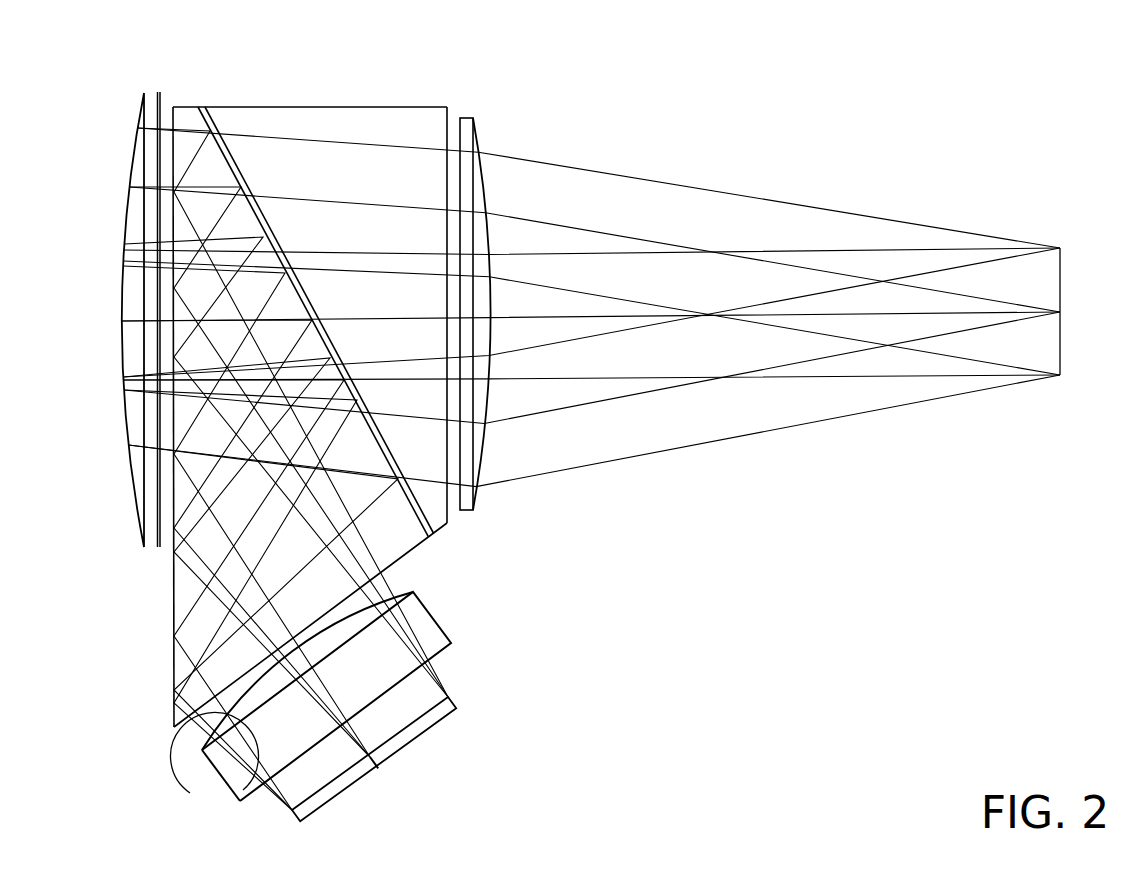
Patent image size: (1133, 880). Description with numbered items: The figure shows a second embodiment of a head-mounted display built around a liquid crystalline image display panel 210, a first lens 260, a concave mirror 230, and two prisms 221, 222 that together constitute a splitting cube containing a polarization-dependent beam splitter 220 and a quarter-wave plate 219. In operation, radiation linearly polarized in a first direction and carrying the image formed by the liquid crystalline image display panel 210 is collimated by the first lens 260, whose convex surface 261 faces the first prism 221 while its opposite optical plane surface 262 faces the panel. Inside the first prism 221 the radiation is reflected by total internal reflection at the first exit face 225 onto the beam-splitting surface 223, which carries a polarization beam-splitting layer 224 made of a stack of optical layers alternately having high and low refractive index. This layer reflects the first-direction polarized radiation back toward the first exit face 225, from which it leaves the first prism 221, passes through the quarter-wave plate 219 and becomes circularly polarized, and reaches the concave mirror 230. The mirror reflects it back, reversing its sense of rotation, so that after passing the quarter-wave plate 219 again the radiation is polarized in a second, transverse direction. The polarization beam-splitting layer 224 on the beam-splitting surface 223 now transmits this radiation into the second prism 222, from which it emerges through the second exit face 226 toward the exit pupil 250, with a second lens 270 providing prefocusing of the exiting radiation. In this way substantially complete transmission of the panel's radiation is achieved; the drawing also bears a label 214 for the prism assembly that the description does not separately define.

The liquid crystalline image display panel 210 is at (410, 748).
The prism 214 is at (295, 107).
The λ/4 plate 219 is at (158, 100).
The polarization-dependent beam splitter 220 is at (160, 537).
The first prism 221 is at (183, 598).
The second prism 222 is at (348, 122).
The beam-splitting surface 223 is at (432, 520).
The polarization beam-splitting layer 224 is at (228, 143).
The first exit face 225 is at (172, 642).
The second exit face 226 is at (447, 110).
The concave mirror 230 is at (125, 483).
The exit pupil 250 is at (1065, 272).
The first lens 260 is at (222, 778).
The convex surface 261 is at (217, 715).
The optical plane surface 262 is at (238, 800).
The second lens 270 is at (475, 130).